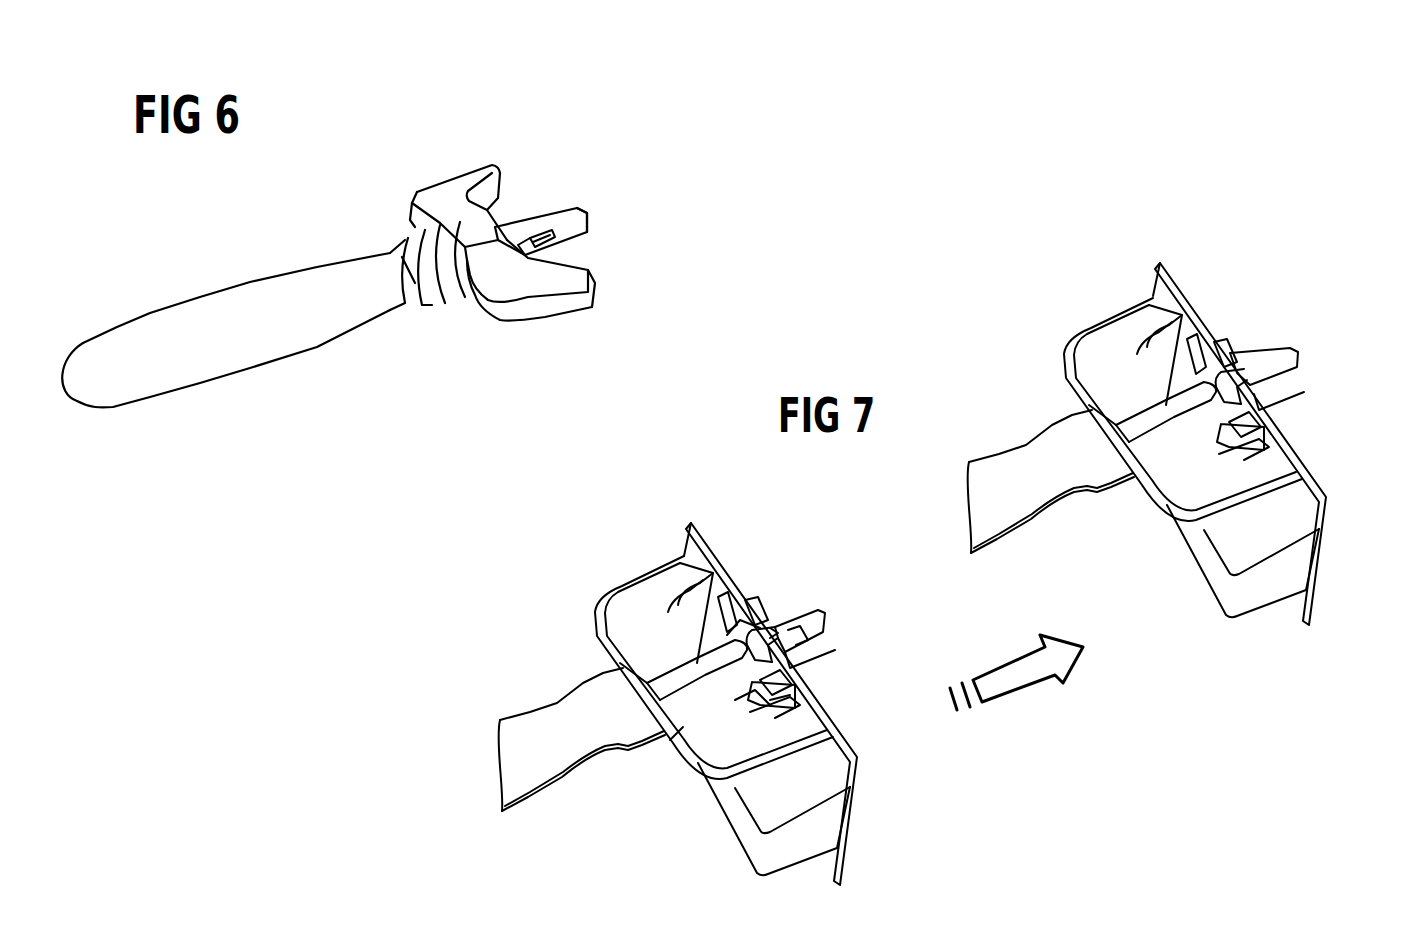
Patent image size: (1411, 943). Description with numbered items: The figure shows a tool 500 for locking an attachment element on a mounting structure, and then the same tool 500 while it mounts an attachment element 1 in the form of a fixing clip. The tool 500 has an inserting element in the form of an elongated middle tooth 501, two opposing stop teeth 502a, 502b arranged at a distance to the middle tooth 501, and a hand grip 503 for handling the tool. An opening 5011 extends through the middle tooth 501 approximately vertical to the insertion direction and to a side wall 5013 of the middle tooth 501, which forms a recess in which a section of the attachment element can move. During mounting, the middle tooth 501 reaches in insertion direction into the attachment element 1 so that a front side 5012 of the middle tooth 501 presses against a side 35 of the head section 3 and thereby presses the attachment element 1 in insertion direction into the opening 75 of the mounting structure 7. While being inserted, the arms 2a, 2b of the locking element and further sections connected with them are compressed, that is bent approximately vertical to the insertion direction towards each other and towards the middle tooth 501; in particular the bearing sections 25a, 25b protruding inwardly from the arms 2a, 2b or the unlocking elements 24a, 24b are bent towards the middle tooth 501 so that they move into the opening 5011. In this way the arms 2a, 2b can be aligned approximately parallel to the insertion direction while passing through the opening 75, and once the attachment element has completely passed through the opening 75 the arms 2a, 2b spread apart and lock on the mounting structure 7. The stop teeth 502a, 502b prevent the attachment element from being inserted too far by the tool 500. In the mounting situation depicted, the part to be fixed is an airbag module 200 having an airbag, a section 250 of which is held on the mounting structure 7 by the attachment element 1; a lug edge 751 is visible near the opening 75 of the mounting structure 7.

In FIG. 6, the tool 500 is at (263, 270).
In FIG. 6, the middle tooth 501 is at (577, 218).
In FIG. 7, the middle tooth 501 is at (812, 625).
In FIG. 6, the stop tooth 502a is at (485, 173).
In FIG. 6, the stop tooth 502b is at (570, 295).
In FIG. 6, the hand grip 503 is at (310, 337).
In FIG. 6, the opening 5011 is at (553, 243).
In FIG. 7, the opening 5011 is at (775, 623).
In FIG. 6, the front side 5012 is at (583, 227).
In FIG. 6, the side wall 5013 is at (560, 242).
In FIG. 7, the attachment element 1 is at (830, 643).
In FIG. 7, the arm 2a is at (802, 643).
In FIG. 7, the arm 2b is at (795, 613).
In FIG. 7, the head section 3 is at (830, 633).
In FIG. 7, the mounting structure 7 is at (838, 763).
In FIG. 7, the unlocking element 24a is at (682, 762).
In FIG. 7, the unlocking element 24b is at (755, 668).
In FIG. 7, the bearing section 25a is at (760, 695).
In FIG. 7, the bearing section 25b is at (765, 633).
In FIG. 7, the side of the head section 35 is at (800, 625).
In FIG. 7, the opening 75 is at (790, 658).
In FIG. 7, the airbag module 200 is at (820, 822).
In FIG. 7, the section of the airbag 250 is at (778, 712).
In FIG. 7, the lug edge 751 is at (787, 690).